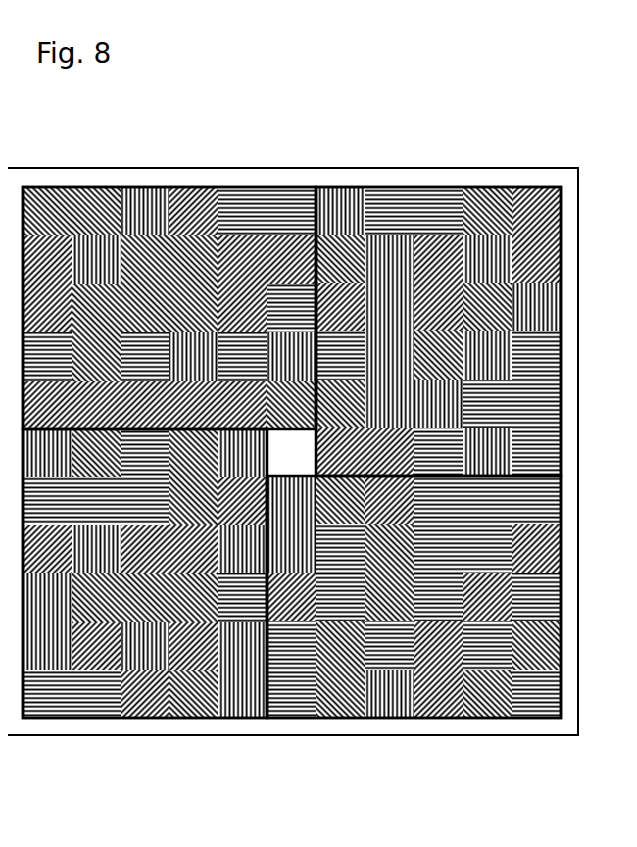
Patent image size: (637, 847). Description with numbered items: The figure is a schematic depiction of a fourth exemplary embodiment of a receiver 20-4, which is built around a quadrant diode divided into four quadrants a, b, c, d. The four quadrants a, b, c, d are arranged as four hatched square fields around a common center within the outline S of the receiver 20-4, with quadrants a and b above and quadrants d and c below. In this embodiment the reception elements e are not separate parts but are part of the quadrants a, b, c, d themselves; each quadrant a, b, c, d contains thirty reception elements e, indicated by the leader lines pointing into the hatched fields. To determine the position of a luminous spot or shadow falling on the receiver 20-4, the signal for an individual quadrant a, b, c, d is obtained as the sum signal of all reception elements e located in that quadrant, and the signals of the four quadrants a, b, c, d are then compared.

The receiver 20-4 is at (243, 167).
The substrate S is at (553, 490).
The quadrant a is at (103, 179).
The quadrant b is at (436, 180).
The quadrant c is at (412, 710).
The quadrant d is at (168, 710).
The reception elements e is at (190, 710).